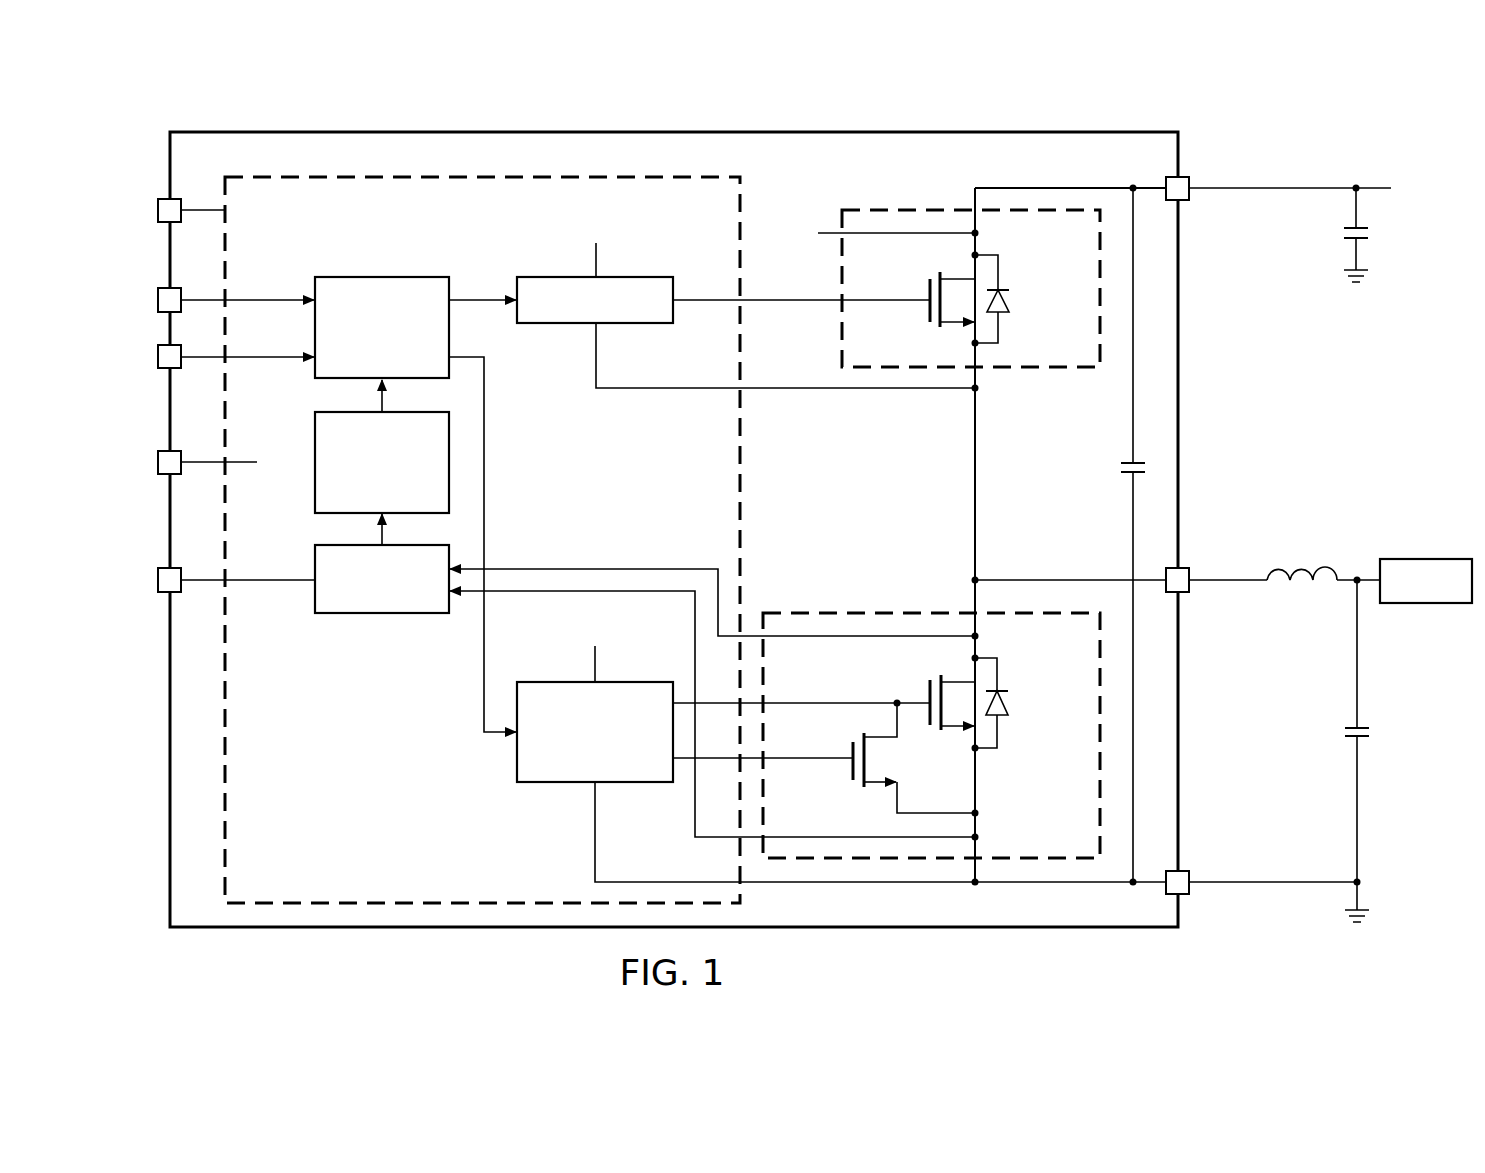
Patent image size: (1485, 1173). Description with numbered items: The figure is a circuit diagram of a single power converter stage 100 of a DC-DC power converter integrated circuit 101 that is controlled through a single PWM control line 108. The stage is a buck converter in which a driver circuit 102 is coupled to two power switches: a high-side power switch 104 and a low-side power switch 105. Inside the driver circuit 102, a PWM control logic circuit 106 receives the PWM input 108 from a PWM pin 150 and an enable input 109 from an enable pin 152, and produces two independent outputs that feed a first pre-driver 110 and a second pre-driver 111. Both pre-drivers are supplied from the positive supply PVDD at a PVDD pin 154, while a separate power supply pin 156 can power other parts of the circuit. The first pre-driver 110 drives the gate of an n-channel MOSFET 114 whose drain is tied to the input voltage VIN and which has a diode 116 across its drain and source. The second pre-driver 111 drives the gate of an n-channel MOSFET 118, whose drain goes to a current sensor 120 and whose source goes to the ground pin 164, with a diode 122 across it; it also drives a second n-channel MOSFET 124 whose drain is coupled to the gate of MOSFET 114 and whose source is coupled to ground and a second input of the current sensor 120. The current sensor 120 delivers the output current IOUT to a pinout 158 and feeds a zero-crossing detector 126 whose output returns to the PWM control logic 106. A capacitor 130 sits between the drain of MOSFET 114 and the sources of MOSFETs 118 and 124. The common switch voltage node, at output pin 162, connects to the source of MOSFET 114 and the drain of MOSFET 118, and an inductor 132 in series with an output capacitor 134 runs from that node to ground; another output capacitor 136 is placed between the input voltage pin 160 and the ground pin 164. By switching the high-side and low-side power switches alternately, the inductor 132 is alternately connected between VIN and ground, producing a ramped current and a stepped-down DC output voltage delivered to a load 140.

The power converter stage 100 is at (1296, 118).
The DC-DC power converter integrated circuit 101 is at (505, 128).
The driver circuit 102 is at (342, 834).
The high-side power switch 104 is at (903, 206).
The low-side power switch 105 is at (878, 609).
The PWM control logic circuit 106 is at (372, 277).
The PWM control line 108 is at (282, 294).
The enable input 109 is at (282, 366).
The first pre-driver 110 is at (562, 326).
The second pre-driver 111 is at (562, 784).
The n-channel MOSFET 114 is at (920, 289).
The diode 116 is at (1003, 301).
The n-channel MOSFET 118 is at (920, 694).
The current sensor 120 is at (372, 617).
The diode 122 is at (1003, 703).
The second n-channel MOSFET 124 is at (850, 770).
The zero-crossing detector 126 is at (315, 484).
The capacitor 130 is at (1125, 469).
The inductor 132 is at (1302, 557).
The output capacitor 134 is at (1366, 735).
The output capacitor 136 is at (1366, 234).
The load 140 is at (1421, 557).
The PWM pin 150 is at (160, 289).
The enable pin 152 is at (160, 370).
The PVDD pin 154 is at (160, 477).
The power supply pin 156 is at (160, 199).
The pinout 158 is at (160, 593).
The input voltage pin 160 is at (1190, 201).
The output pin 162 is at (1190, 593).
The ground pin 164 is at (1190, 895).